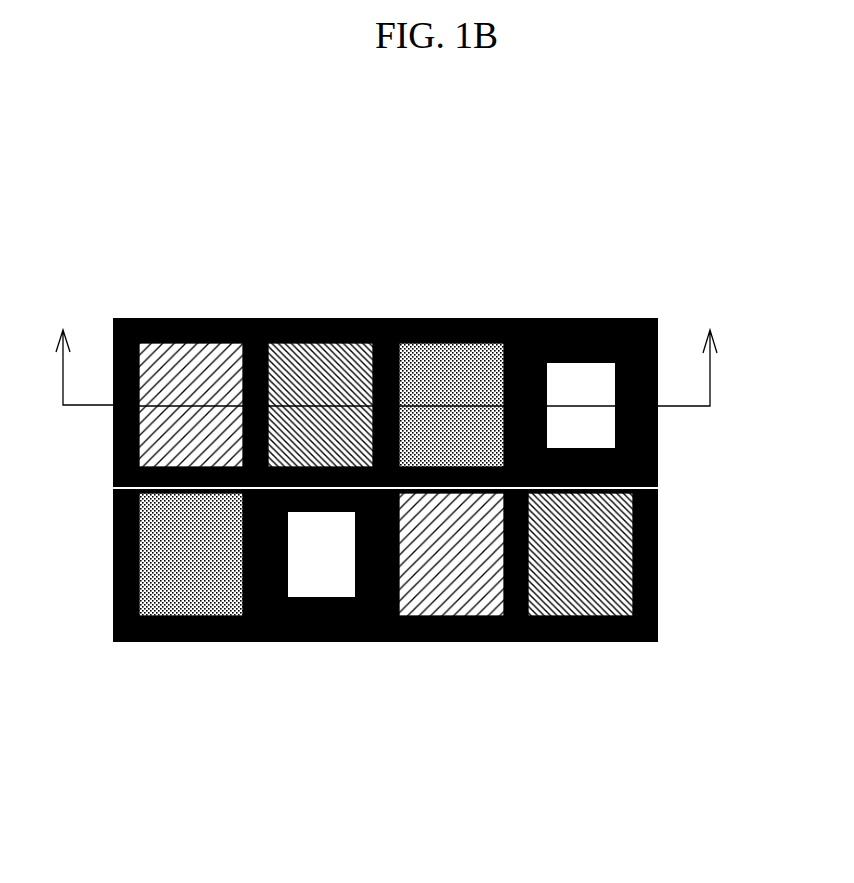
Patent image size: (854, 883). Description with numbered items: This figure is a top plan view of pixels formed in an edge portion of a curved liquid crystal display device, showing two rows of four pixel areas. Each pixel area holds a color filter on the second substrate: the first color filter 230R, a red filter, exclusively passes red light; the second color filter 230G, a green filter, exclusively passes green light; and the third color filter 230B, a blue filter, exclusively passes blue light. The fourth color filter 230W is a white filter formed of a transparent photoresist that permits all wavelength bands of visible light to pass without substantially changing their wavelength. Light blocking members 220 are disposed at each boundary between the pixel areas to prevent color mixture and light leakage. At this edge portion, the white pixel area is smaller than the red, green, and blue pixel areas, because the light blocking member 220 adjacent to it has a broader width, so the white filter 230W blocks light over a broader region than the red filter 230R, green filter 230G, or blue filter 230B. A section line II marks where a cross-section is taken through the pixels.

The light blocking member 220 is at (658, 477).
The first color filter 230R is at (212, 360).
The second color filter 230G is at (341, 358).
The third color filter 230B is at (428, 358).
The fourth color filter 230W is at (568, 393).
The section line II- II is at (387, 351).